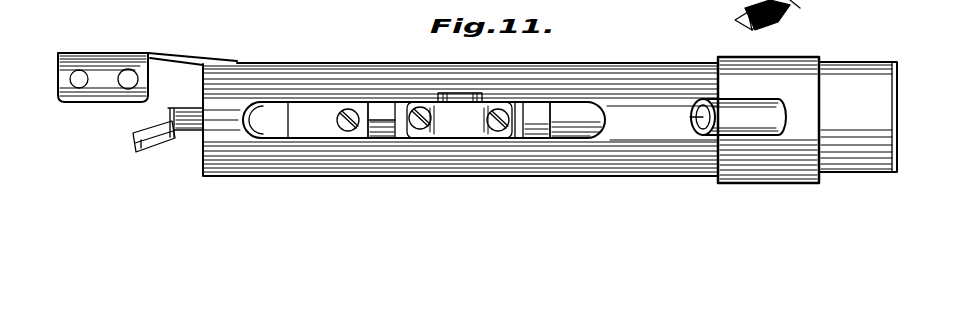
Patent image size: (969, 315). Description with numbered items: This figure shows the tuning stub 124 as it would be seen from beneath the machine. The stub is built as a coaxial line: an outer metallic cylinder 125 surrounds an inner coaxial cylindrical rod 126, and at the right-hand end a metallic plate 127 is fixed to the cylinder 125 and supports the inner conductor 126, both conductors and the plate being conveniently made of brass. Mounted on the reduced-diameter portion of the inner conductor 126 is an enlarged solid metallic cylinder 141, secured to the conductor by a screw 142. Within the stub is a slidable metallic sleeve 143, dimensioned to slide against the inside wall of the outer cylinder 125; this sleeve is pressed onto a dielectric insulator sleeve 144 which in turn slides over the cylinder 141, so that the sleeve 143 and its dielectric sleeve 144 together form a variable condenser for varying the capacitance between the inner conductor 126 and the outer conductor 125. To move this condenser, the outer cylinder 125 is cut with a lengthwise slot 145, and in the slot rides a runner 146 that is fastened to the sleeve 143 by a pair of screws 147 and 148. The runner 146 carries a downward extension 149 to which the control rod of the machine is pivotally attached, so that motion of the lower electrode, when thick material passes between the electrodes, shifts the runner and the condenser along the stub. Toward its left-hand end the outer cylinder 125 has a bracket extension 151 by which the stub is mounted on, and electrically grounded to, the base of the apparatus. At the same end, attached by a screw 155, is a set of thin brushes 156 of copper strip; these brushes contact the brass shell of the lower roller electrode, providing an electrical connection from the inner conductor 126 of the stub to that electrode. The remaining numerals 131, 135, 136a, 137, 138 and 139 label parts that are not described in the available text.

The tuning stub 124 is at (318, 58).
The outer metallic cylinder 125 is at (672, 146).
The inner coaxial cylindrical rod 126 is at (582, 134).
The metallic plate 127 is at (897, 137).
The lever 131 is at (726, 5).
The arm 135 is at (826, 5).
The wedge 136a is at (782, 23).
The collar 137 is at (752, 128).
The collar wall 138 is at (792, 88).
The catch 139 is at (742, 27).
The enlarged solid metallic cylinder 141 is at (304, 118).
The screw 142 is at (337, 127).
The slidable metallic sleeve 143 is at (398, 128).
The dielectric insulator sleeve 144 is at (380, 112).
The lengthwise slot 145 is at (562, 105).
The runner 146 is at (459, 120).
The screw 147 is at (412, 129).
The screw 148 is at (500, 132).
The downward extension 149 is at (447, 93).
The bracket extension 151 is at (150, 53).
The screw 155 is at (168, 110).
The thin brushes 156 is at (140, 148).